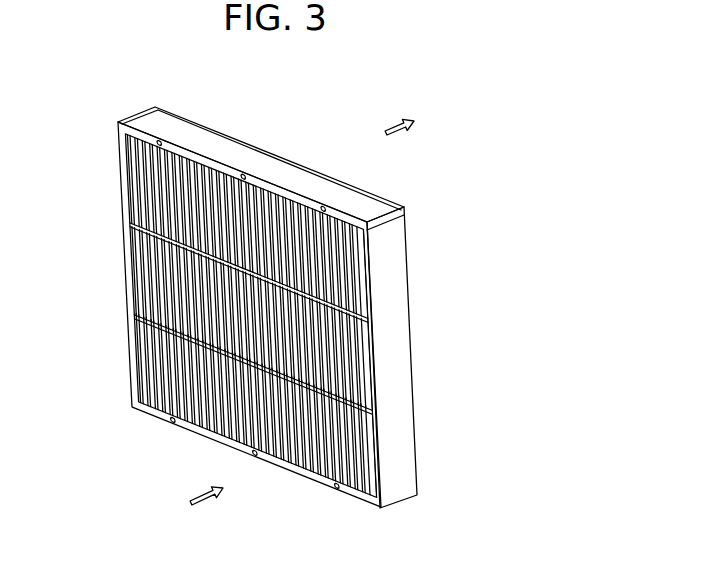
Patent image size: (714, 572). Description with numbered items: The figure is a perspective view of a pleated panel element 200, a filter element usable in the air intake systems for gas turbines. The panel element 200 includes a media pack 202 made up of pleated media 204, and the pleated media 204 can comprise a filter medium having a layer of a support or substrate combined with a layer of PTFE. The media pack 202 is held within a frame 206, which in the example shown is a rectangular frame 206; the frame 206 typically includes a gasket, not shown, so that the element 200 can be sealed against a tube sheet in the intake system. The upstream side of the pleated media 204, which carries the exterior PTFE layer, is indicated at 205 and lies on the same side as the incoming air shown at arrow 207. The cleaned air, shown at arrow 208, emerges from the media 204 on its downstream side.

The pleated panel element 200 is at (312, 127).
The media pack 202 is at (170, 270).
The pleated media 204 is at (168, 355).
The upstream side of the pleated media 205 is at (200, 408).
The frame 206 is at (395, 273).
The arrow indicating incoming air 207 is at (203, 503).
The arrow indicating cleaned air 208 is at (398, 133).